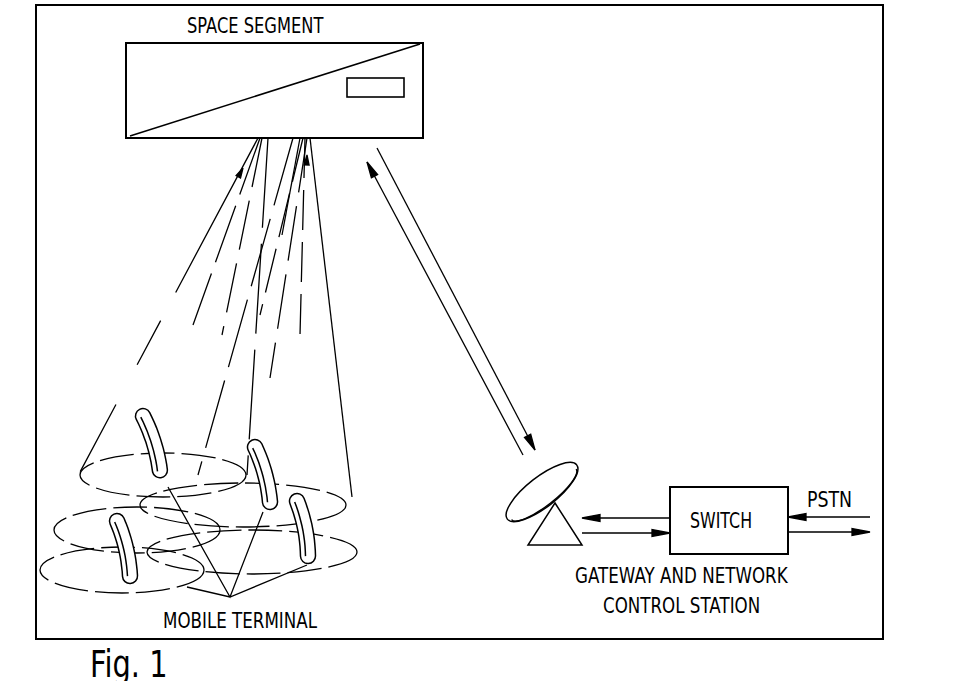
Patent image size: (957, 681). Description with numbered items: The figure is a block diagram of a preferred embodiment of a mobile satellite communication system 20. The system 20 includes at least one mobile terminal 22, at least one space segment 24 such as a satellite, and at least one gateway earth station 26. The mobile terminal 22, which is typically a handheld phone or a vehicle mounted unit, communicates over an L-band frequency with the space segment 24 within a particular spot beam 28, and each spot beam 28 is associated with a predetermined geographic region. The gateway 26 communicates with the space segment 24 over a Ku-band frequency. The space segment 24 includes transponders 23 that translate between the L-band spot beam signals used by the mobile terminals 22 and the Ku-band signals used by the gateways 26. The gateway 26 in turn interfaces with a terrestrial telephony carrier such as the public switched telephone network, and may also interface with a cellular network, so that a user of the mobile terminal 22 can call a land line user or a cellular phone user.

The mobile satellite communication system 20 is at (460, 639).
The mobile terminal 22 is at (118, 578).
The transponder 23 is at (404, 88).
The space segment 24 is at (418, 43).
The gateway earth station 26 is at (508, 518).
The spot beam 28 is at (330, 322).